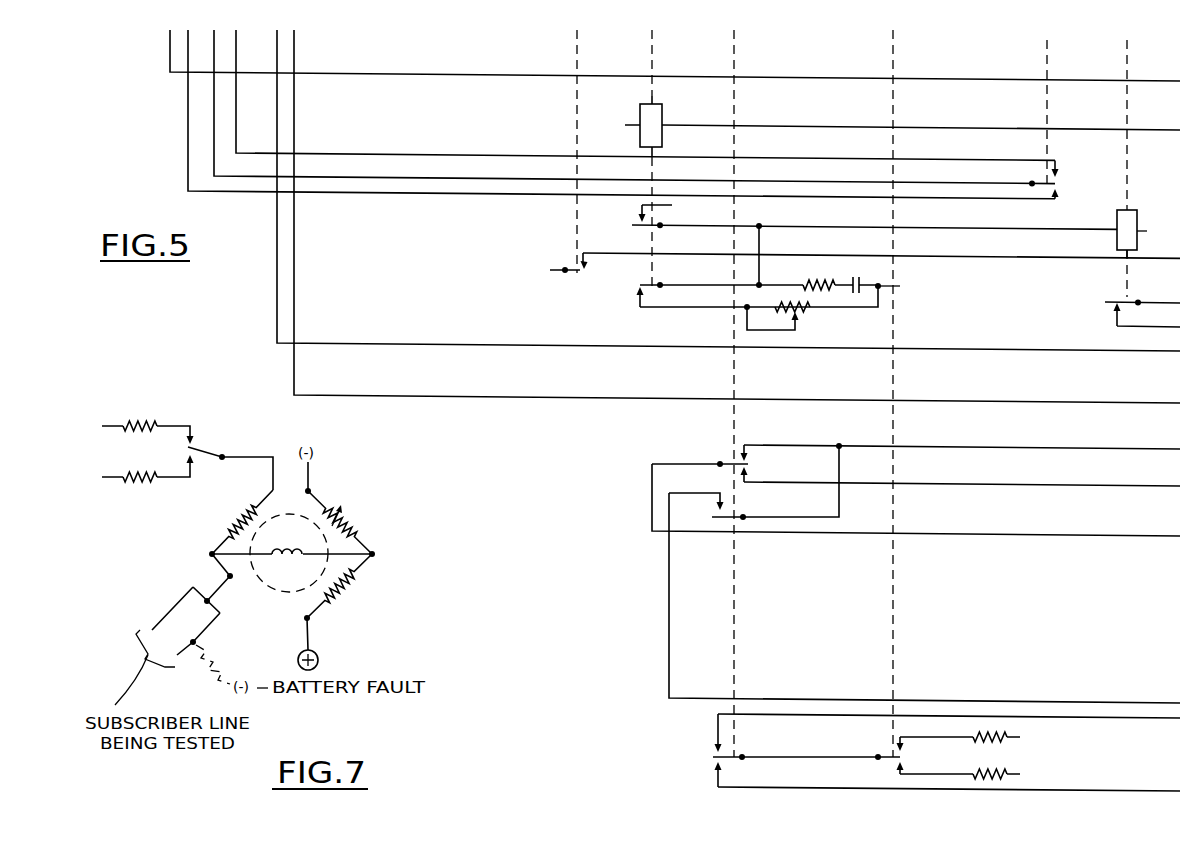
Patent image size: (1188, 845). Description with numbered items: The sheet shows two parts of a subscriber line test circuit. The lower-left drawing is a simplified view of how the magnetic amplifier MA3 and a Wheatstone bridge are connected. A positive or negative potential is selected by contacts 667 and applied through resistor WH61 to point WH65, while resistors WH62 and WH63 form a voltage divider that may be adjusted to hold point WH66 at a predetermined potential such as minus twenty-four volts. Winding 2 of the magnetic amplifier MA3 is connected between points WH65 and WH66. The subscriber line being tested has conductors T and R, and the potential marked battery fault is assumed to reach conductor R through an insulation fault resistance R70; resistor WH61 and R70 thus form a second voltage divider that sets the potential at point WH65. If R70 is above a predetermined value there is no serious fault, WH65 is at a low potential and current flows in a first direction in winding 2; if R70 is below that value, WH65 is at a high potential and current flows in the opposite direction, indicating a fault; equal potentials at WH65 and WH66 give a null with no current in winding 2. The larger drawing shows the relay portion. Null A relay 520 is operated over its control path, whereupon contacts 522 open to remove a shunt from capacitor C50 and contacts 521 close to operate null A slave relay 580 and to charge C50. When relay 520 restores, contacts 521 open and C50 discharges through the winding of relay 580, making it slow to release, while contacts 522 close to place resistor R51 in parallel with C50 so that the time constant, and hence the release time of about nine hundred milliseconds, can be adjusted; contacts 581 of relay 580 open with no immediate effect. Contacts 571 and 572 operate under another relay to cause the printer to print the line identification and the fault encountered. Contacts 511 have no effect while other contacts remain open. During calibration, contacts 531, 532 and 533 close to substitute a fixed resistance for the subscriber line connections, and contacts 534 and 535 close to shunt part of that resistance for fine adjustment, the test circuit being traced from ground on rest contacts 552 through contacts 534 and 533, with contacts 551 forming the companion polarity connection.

In FIG. 5, the null A relay 520 is at (652, 78).
In FIG. 5, the null A slave relay 580 is at (1127, 82).
In FIG. 5, the contacts 571 is at (1057, 171).
In FIG. 5, the contacts 572 is at (1064, 189).
In FIG. 5, the contacts 521 is at (638, 220).
In FIG. 5, the contacts 511 is at (589, 270).
In FIG. 5, the contacts 522 is at (636, 287).
In FIG. 5, the capacitor C50 is at (850, 277).
In FIG. 5, the resistor R51 is at (798, 316).
In FIG. 5, the contacts 581 is at (1114, 299).
In FIG. 5, the contacts 531 is at (748, 455).
In FIG. 5, the contacts 532 is at (748, 469).
In FIG. 5, the contacts 533 is at (716, 506).
In FIG. 5, the contacts 534 is at (714, 748).
In FIG. 5, the contacts 535 is at (712, 758).
In FIG. 5, the contacts 551 is at (902, 748).
In FIG. 5, the rest contacts 552 is at (902, 763).
In FIG. 7, the contacts 667 is at (198, 444).
In FIG. 7, the resistor WH61 is at (228, 519).
In FIG. 7, the resistor WH62 is at (346, 521).
In FIG. 7, the resistor WH63 is at (348, 594).
In FIG. 7, the point WH65 is at (209, 555).
In FIG. 7, the point WH66 is at (375, 554).
In FIG. 7, the magnetic amplifier MA3 is at (289, 553).
In FIG. 7, the winding 2 is at (284, 559).
In FIG. 7, the conductor T is at (155, 618).
In FIG. 7, the conductor R is at (181, 654).
In FIG. 7, the insulation fault resistance R70 is at (211, 673).